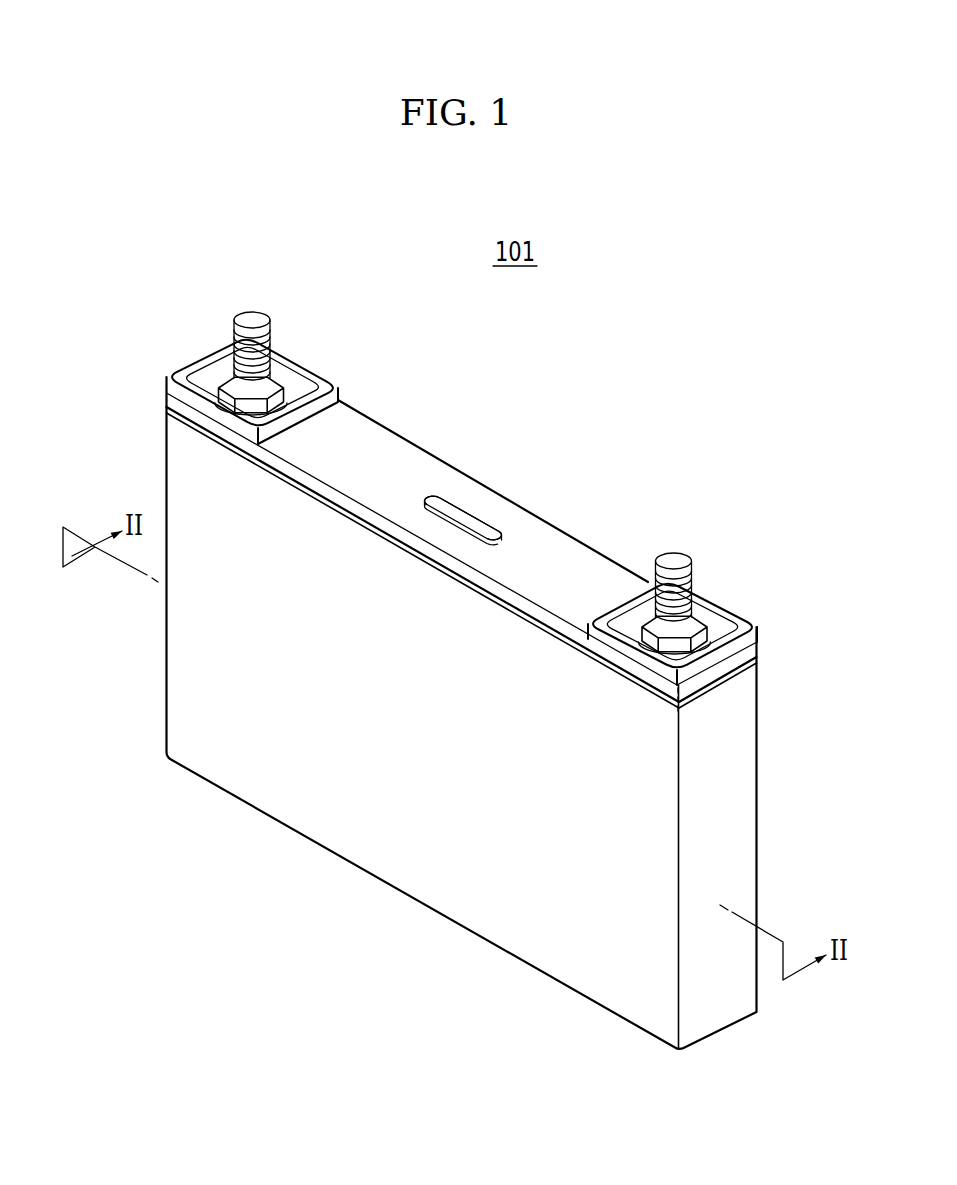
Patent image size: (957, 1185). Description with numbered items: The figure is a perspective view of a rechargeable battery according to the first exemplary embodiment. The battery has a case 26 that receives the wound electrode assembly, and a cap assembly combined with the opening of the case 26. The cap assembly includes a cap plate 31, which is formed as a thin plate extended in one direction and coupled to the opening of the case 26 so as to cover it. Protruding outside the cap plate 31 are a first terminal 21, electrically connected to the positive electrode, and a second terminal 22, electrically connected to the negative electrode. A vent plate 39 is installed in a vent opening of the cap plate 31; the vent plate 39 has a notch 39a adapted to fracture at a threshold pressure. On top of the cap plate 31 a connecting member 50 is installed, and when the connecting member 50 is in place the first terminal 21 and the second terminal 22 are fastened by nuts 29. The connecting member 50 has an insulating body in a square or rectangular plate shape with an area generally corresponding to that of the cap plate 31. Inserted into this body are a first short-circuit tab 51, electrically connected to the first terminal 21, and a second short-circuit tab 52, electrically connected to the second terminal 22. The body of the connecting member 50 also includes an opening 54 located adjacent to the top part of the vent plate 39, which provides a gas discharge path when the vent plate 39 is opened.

The first terminal 21 is at (677, 557).
The second terminal 22 is at (254, 318).
The case 26 is at (322, 802).
The nut 29 is at (227, 393).
The cap plate 31 is at (197, 429).
The vent plate 39 is at (473, 527).
The notch 39a is at (447, 517).
The connecting member 50 is at (393, 425).
The first short-circuit tab 51 is at (713, 637).
The second short-circuit tab 52 is at (293, 393).
The opening 54 is at (500, 523).